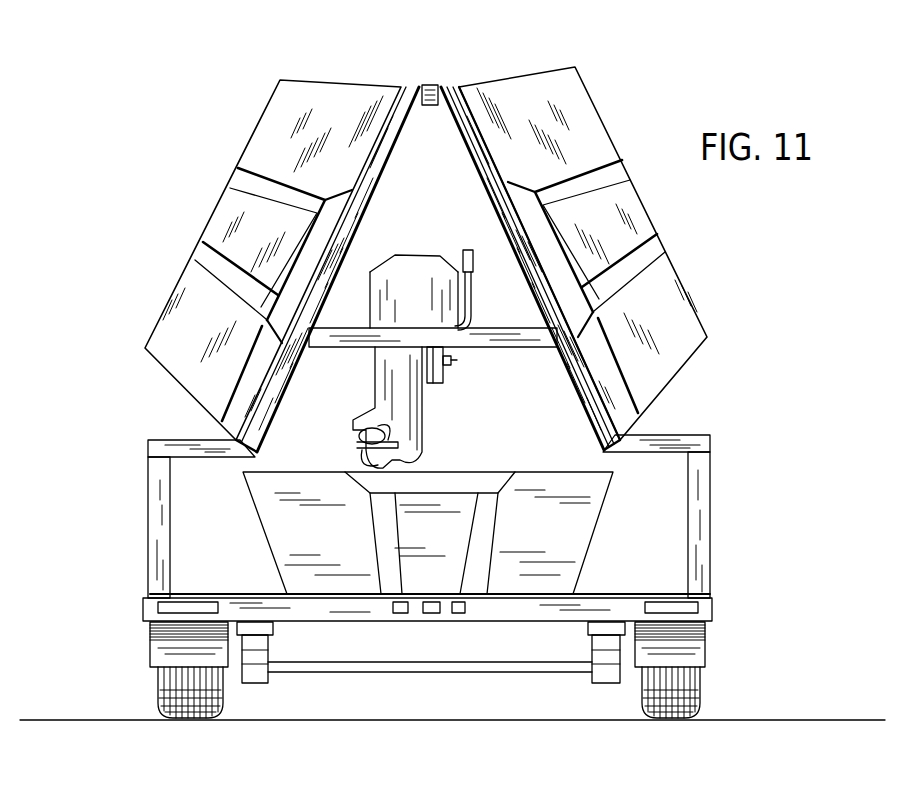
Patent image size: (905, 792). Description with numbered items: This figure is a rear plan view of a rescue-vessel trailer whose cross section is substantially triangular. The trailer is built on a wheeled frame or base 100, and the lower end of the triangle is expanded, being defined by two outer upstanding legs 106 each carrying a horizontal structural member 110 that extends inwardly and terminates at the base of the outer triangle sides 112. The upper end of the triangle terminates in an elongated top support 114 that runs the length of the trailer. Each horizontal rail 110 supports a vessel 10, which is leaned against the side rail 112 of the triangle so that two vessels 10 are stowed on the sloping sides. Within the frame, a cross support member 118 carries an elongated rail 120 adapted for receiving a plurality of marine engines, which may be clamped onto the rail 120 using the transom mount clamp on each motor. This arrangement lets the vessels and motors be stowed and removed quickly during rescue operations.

The vessel 10 is at (273, 137).
The wheeled frame or base 100 is at (712, 603).
The outer upstanding leg 106 is at (155, 508).
The horizontal structural member 110 is at (177, 442).
The outer triangle side 112 is at (263, 405).
The elongated top support 114 is at (428, 85).
The cross support member 118 is at (487, 346).
The elongated rail 120 is at (434, 384).